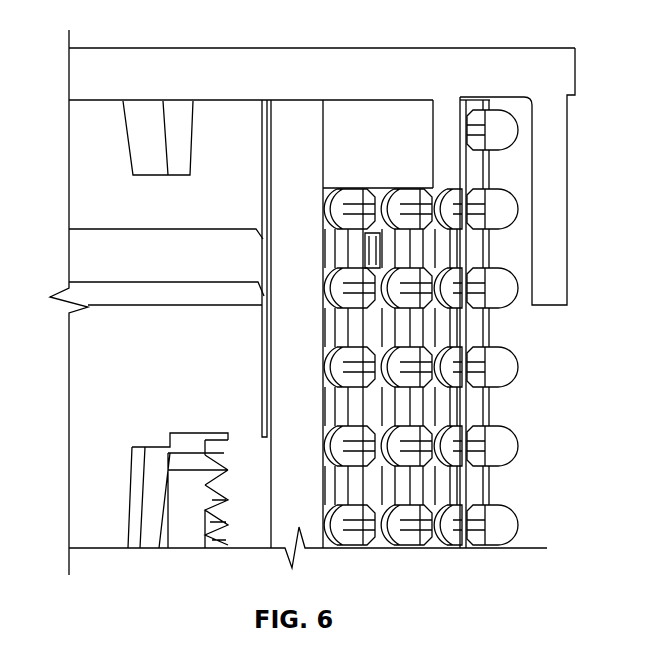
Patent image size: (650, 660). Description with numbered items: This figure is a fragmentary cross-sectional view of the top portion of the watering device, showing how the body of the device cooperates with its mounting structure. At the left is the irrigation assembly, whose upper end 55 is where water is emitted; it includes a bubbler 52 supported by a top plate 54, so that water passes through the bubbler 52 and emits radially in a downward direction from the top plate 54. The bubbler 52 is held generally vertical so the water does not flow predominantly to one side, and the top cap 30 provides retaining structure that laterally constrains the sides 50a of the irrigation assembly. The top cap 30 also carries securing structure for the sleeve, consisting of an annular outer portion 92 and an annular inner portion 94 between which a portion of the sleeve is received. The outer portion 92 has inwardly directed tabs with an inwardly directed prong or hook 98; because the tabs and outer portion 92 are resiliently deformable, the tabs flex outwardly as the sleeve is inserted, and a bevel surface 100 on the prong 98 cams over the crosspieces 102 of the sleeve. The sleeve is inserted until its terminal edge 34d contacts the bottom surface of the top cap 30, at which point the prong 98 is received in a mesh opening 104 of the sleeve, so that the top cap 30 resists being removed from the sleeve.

The top cap 30 is at (391, 48).
The annular inner portion 94 is at (447, 98).
The terminal edge 34d is at (470, 98).
The crosspiece 102 is at (372, 190).
The mesh opening 104 is at (372, 258).
The annular outer portion 92 is at (556, 259).
The prong 98 is at (436, 284).
The bevel surface 100 is at (452, 292).
The top plate 54 is at (82, 261).
The bubbler 52 is at (82, 369).
The upper end 55 is at (242, 352).
The sides 50a is at (268, 374).